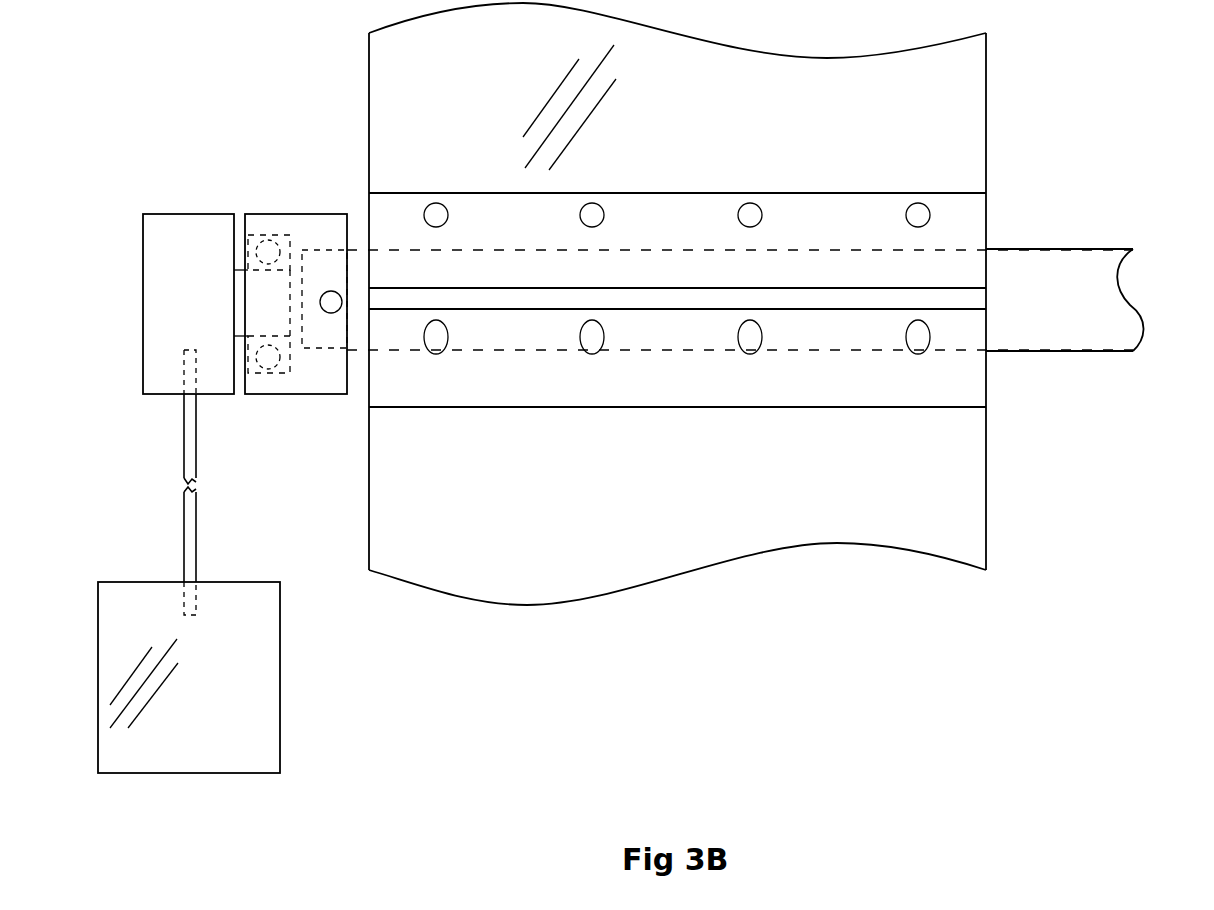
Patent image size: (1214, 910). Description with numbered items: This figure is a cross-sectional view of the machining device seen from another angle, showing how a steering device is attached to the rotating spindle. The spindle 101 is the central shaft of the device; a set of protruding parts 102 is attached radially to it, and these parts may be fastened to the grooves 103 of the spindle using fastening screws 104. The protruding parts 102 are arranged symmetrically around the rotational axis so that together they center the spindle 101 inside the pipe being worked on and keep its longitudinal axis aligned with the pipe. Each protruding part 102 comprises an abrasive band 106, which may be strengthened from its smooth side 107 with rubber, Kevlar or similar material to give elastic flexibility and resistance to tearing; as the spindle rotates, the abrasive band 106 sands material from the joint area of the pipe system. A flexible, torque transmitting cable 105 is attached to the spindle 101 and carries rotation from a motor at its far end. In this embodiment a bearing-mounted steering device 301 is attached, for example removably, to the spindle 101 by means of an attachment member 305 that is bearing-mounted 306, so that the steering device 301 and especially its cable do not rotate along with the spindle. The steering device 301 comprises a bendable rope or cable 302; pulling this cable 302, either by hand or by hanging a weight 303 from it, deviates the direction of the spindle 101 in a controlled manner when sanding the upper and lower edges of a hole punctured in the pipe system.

The spindle 101 is at (987, 231).
The protruding parts 102 is at (990, 503).
The grooves 103 is at (988, 292).
The fastening screws 104 is at (749, 198).
The flexible, torque transmitting cable 105 is at (1127, 243).
The abrasive band 106 is at (596, 107).
The smooth side 107 is at (617, 492).
The steering device 301 is at (143, 298).
The bendable rope or cable 302 is at (182, 453).
The weight 303 is at (147, 582).
The attachment member 305 is at (322, 213).
The bearing-mounted 306 is at (256, 235).